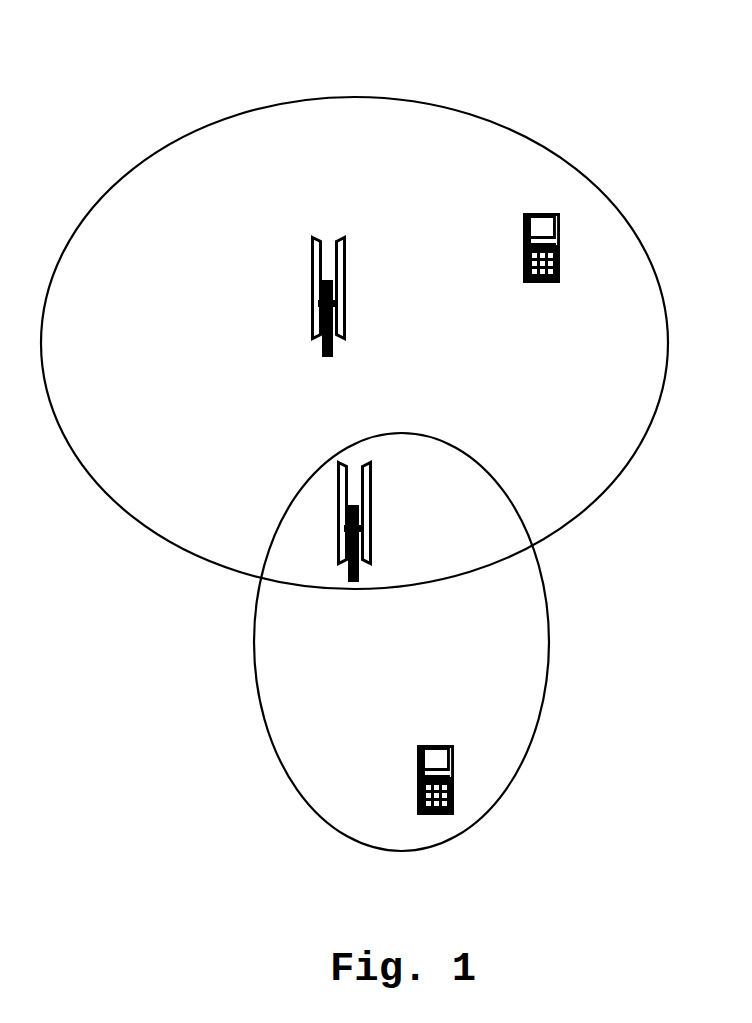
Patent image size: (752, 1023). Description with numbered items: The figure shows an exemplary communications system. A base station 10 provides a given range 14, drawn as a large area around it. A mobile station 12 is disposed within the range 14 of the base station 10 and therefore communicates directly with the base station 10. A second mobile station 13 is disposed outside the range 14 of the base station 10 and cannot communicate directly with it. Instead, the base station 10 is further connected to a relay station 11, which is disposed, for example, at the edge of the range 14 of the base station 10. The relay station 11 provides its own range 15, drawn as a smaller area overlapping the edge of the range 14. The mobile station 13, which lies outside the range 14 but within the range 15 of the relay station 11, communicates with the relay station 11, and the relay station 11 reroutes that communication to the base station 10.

The base station 10 is at (311, 278).
The relay station 11 is at (372, 472).
The mobile station 12 is at (560, 232).
The mobile station 13 is at (453, 778).
The range 14 is at (198, 130).
The range 15 is at (254, 650).